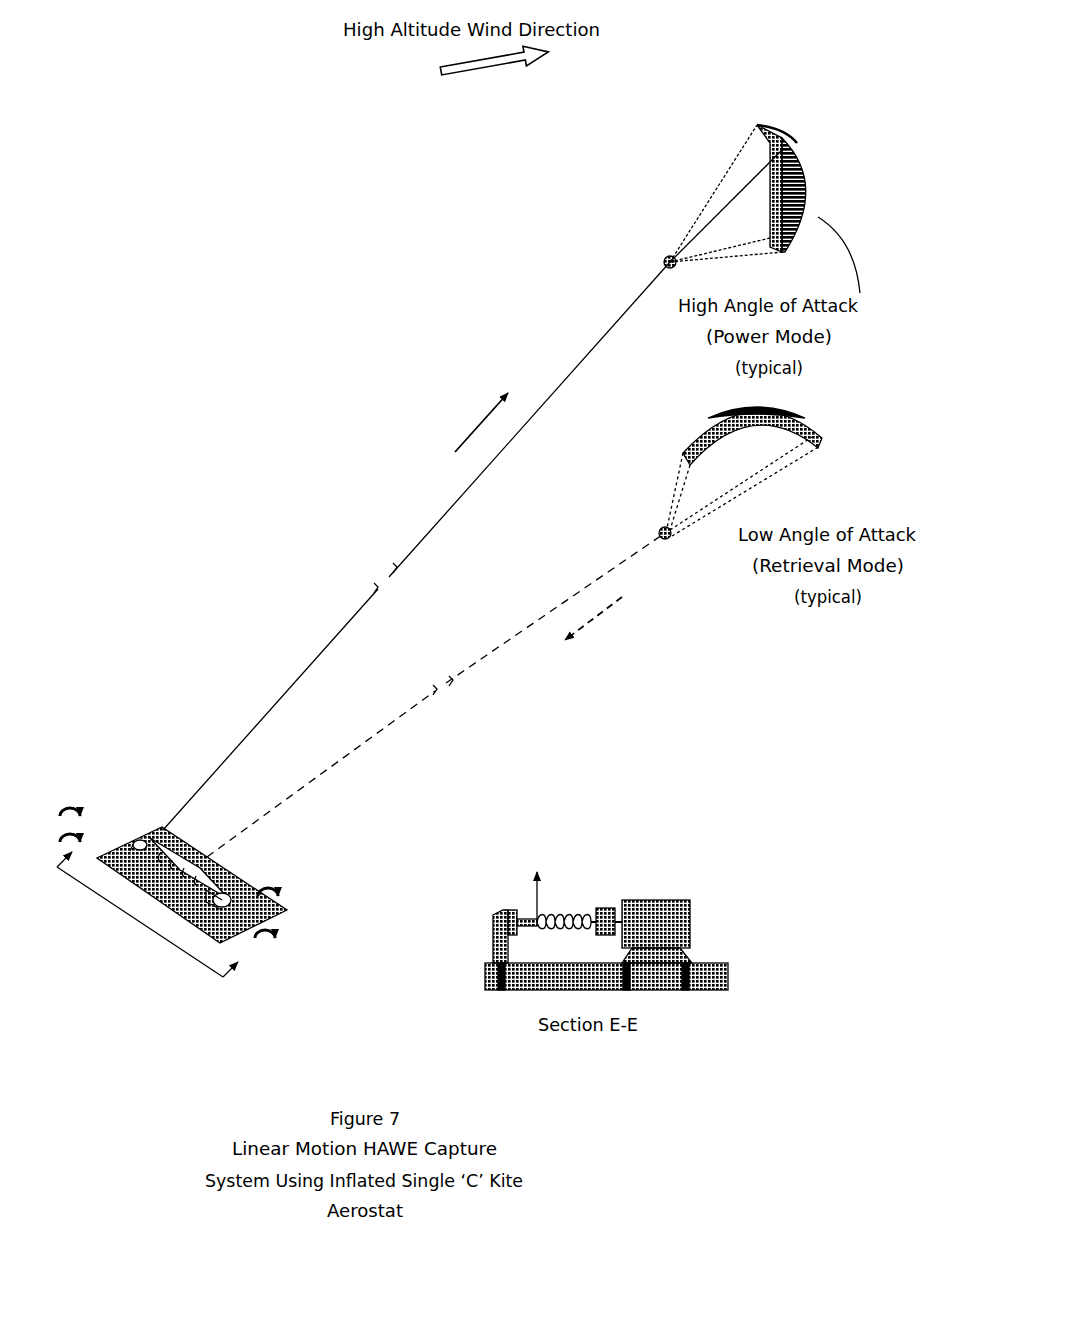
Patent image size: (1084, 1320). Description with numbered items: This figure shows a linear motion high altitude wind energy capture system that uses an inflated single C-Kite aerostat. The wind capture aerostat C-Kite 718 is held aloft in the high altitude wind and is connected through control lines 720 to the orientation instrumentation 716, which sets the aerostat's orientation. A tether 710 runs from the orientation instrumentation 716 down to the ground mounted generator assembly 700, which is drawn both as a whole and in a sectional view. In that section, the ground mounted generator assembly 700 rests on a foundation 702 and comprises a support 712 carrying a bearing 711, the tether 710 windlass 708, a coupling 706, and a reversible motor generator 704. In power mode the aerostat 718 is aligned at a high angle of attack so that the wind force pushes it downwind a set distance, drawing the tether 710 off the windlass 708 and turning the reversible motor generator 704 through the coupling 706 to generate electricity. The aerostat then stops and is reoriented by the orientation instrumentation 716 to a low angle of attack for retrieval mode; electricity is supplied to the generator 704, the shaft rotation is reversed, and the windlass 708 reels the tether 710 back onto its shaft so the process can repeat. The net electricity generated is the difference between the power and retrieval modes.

The ground mounted generator assembly 700 is at (143, 827).
The foundation 702 is at (715, 963).
The reversible motor generator 704 is at (692, 912).
The coupling 706 is at (598, 905).
The windlass 708 is at (567, 917).
The tether 710 is at (487, 467).
The bearing 711 is at (497, 917).
The support 712 is at (493, 930).
The orientation instrumentation 716 is at (663, 257).
The wind capture aerostat C-Kite 718 is at (845, 117).
The control lines 720 is at (743, 155).